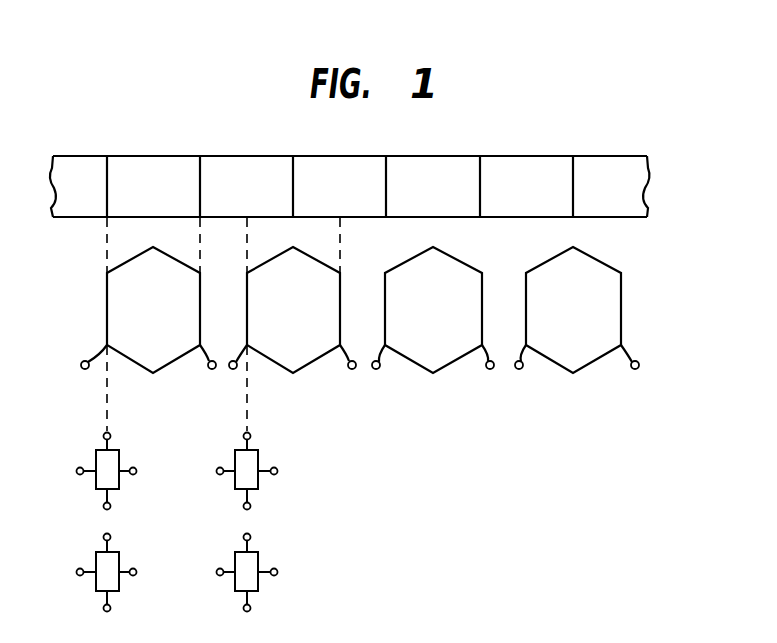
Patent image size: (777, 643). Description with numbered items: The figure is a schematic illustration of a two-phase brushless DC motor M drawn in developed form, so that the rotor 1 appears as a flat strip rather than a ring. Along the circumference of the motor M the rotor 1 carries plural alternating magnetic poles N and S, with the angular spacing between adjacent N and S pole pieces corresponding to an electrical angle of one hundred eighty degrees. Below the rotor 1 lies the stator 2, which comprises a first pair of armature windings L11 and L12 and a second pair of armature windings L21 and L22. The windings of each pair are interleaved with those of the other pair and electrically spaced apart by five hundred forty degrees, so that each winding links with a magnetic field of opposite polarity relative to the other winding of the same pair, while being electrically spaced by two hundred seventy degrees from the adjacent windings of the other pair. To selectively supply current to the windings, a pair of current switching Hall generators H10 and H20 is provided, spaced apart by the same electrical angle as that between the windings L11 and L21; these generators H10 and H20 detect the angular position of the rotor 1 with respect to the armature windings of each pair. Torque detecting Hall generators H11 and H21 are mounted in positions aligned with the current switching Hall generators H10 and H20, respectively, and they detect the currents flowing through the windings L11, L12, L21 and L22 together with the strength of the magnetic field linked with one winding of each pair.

The rotor 1 is at (551, 156).
The stator 2 is at (383, 310).
The two-phase brushless DC motor M is at (136, 146).
The armature winding L11 is at (148, 310).
The armature winding L21 is at (292, 310).
The armature winding L12 is at (433, 310).
The armature winding L22 is at (577, 310).
The Hall generator H10 is at (119, 450).
The torque detecting Hall generator H11 is at (119, 552).
The Hall generator H20 is at (258, 450).
The torque detecting Hall generator H21 is at (258, 552).